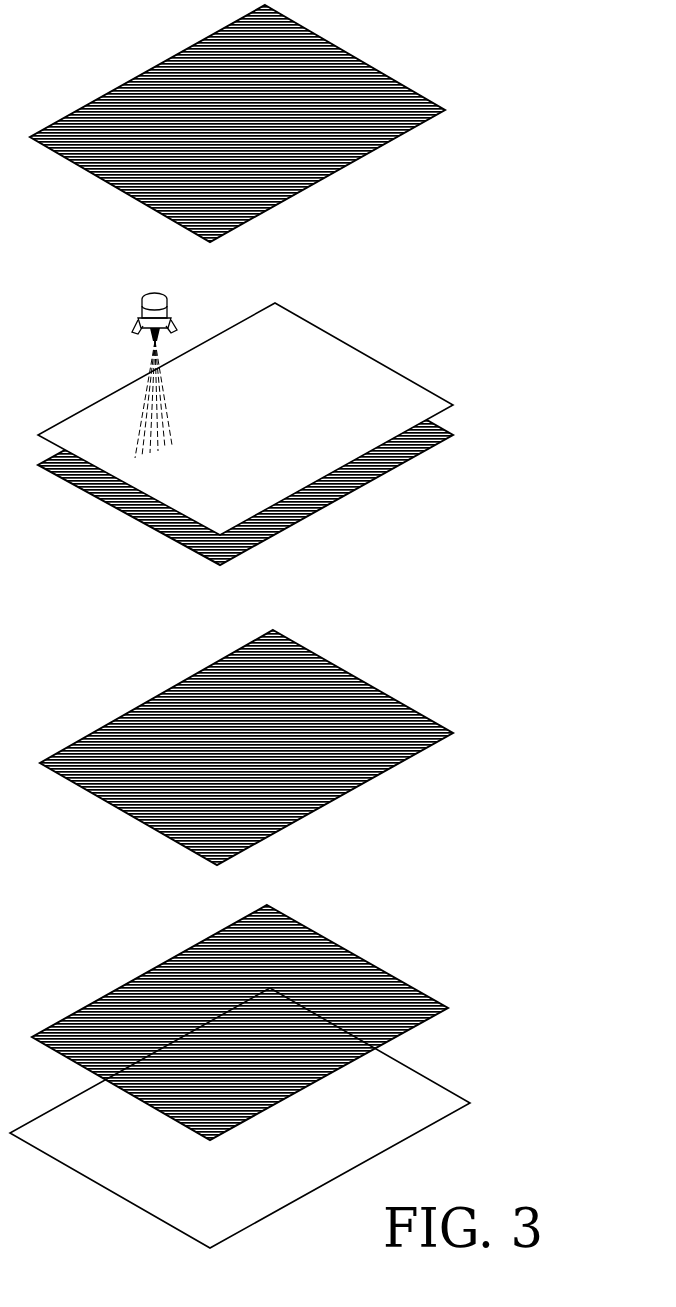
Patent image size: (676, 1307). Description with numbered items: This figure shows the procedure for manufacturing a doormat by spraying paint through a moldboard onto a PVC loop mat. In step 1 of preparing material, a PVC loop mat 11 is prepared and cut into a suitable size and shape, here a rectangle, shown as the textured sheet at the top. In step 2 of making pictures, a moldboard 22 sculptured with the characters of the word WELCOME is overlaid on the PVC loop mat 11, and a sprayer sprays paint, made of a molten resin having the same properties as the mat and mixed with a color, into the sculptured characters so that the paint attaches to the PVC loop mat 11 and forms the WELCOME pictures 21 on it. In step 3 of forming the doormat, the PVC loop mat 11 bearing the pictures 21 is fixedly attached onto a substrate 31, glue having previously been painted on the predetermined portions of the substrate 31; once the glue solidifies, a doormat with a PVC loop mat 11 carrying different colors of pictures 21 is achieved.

The step of preparing material 1 is at (478, 67).
The PVC loop mat 11 is at (320, 43).
The step of making pictures 2 is at (269, 561).
The pictures 21 is at (130, 817).
The moldboard 22 is at (308, 352).
The step of forming the doormat 3 is at (305, 1076).
The substrate 31 is at (330, 1145).